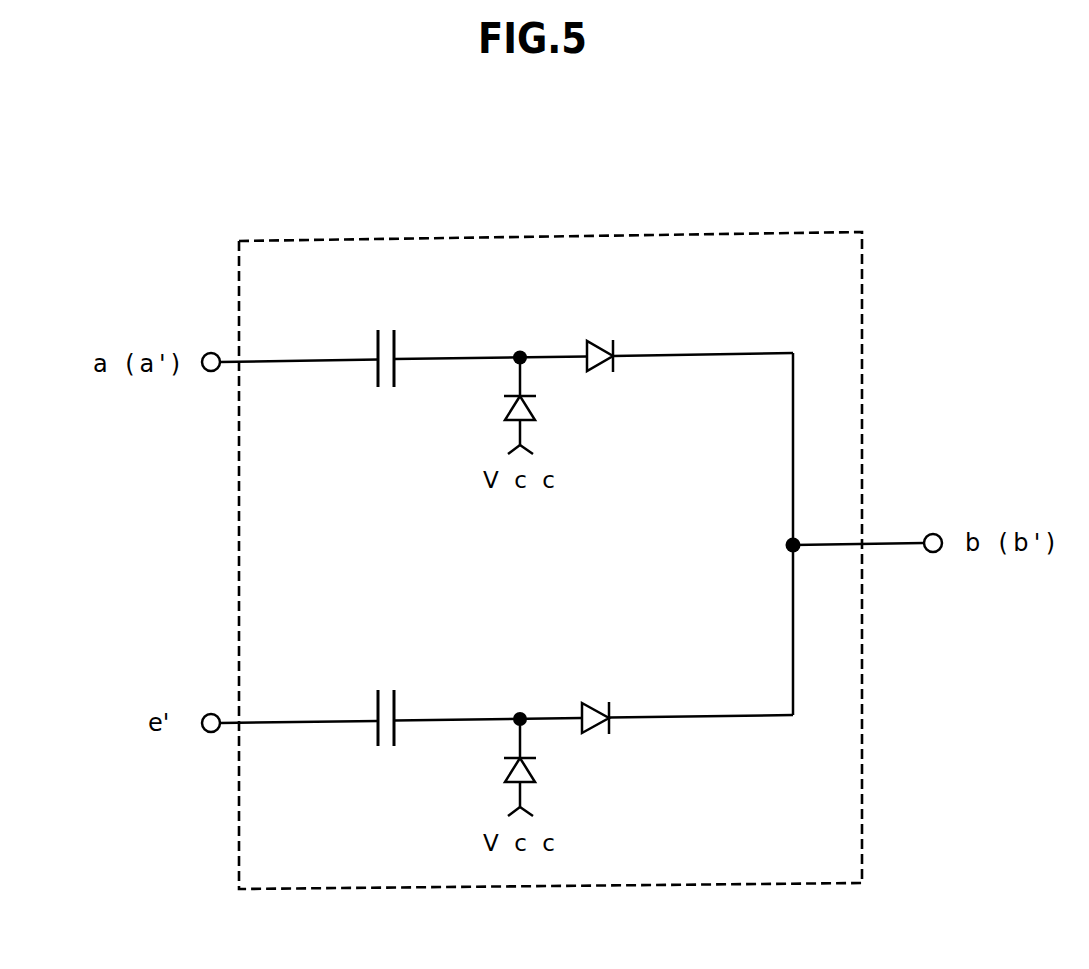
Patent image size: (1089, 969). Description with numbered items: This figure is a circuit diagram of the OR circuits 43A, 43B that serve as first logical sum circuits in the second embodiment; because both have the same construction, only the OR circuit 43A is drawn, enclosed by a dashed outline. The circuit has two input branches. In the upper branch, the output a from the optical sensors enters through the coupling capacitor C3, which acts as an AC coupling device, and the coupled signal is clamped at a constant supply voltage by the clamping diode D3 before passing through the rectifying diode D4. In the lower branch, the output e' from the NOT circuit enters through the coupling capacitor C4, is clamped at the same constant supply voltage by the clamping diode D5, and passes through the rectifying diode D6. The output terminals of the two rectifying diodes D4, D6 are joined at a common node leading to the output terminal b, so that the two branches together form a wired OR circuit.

The OR circuit 43A is at (744, 230).
The OR circuit 43B is at (605, 542).
The coupling capacitor C3 is at (380, 334).
The coupling capacitor C4 is at (380, 698).
The clamping diode D3 is at (553, 405).
The rectifying diode D4 is at (637, 332).
The clamping diode D5 is at (553, 767).
The rectifying diode D6 is at (635, 705).